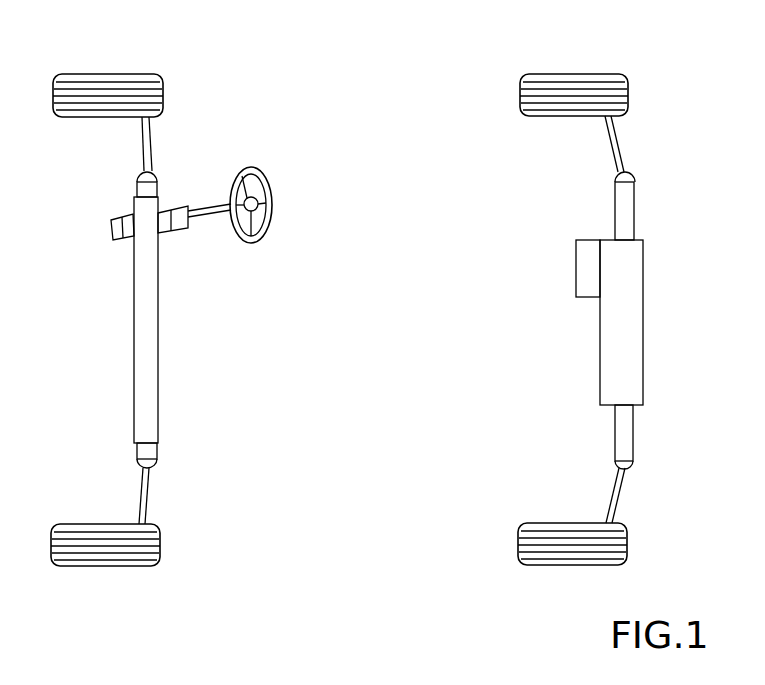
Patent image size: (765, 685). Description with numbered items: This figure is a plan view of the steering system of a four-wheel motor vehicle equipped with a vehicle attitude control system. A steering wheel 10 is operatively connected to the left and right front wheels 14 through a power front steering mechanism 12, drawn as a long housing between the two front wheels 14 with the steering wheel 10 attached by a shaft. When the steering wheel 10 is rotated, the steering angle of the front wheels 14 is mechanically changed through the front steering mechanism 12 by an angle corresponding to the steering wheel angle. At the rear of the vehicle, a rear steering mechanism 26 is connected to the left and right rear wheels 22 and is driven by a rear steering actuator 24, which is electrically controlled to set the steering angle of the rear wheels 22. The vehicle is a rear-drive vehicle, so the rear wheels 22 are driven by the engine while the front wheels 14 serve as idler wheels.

The steering wheel 10 is at (245, 167).
The power front steering mechanism 12 is at (142, 340).
The front wheels 14 is at (69, 75).
The rear wheels 22 is at (572, 80).
The rear steering actuator 24 is at (587, 252).
The rear steering mechanism 26 is at (615, 360).